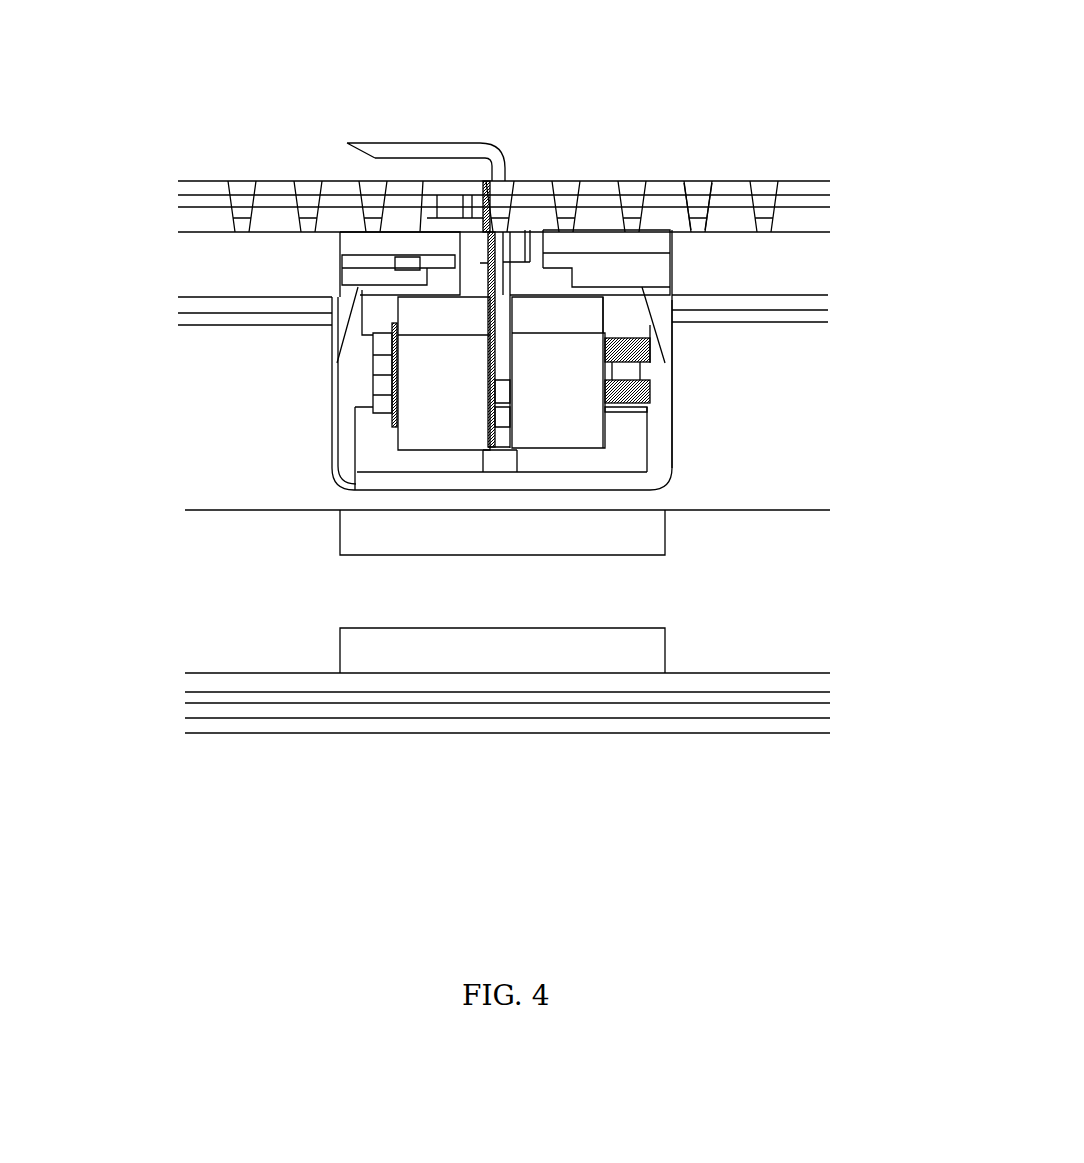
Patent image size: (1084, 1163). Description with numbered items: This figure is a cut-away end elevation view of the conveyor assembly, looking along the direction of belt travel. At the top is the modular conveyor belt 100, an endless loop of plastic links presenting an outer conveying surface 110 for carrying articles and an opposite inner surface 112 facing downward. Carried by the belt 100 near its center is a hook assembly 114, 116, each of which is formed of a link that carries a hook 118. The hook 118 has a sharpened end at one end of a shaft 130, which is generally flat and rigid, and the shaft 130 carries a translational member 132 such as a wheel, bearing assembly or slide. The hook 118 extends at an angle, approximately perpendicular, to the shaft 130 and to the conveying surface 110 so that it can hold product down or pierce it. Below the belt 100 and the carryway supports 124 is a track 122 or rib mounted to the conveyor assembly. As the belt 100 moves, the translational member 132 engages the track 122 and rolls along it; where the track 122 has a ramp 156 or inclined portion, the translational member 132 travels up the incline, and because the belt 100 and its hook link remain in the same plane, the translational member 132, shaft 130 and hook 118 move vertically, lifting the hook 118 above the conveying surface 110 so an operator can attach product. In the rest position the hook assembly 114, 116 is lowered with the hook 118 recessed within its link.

The modular conveyor belt 100 is at (665, 181).
The outer conveying surface 110 is at (623, 176).
The inner surface 112 is at (238, 244).
The hook assembly 114 is at (413, 312).
The hook assembly 116 is at (423, 373).
The hook 118 is at (395, 157).
The track 122 is at (480, 477).
The carryway supports 124 is at (778, 428).
The shaft 130 is at (500, 283).
The translational member 132 is at (545, 335).
The ramp 156 is at (370, 455).